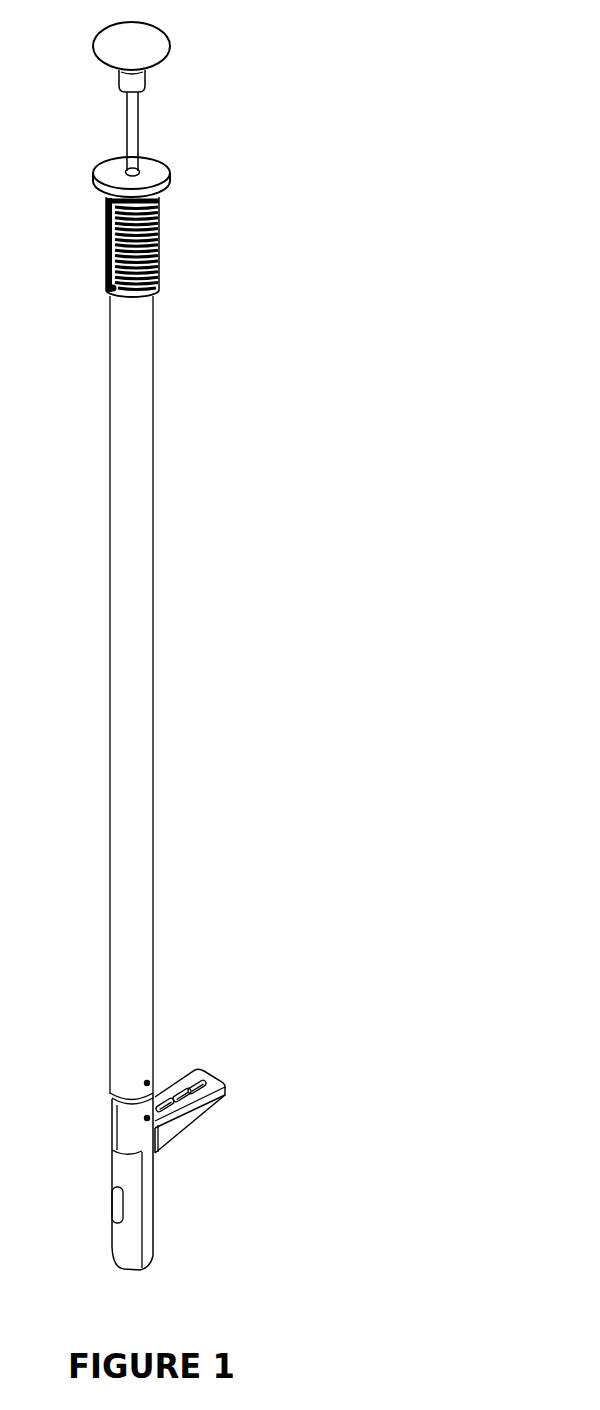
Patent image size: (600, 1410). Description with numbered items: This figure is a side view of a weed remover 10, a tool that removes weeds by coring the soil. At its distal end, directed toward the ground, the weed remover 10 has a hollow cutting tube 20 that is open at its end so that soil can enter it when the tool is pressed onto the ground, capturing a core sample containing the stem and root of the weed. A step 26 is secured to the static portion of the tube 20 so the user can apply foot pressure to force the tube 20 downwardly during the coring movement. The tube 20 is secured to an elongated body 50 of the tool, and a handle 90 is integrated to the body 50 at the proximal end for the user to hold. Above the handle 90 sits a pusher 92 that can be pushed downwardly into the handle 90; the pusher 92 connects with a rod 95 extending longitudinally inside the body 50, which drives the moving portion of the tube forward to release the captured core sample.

The weed remover 10 is at (236, 367).
The cutting tube 20 is at (152, 1212).
The step 26 is at (210, 1093).
The body 50 is at (145, 723).
The handle 90 is at (160, 222).
The pusher 92 is at (162, 53).
The rod 95 is at (132, 127).